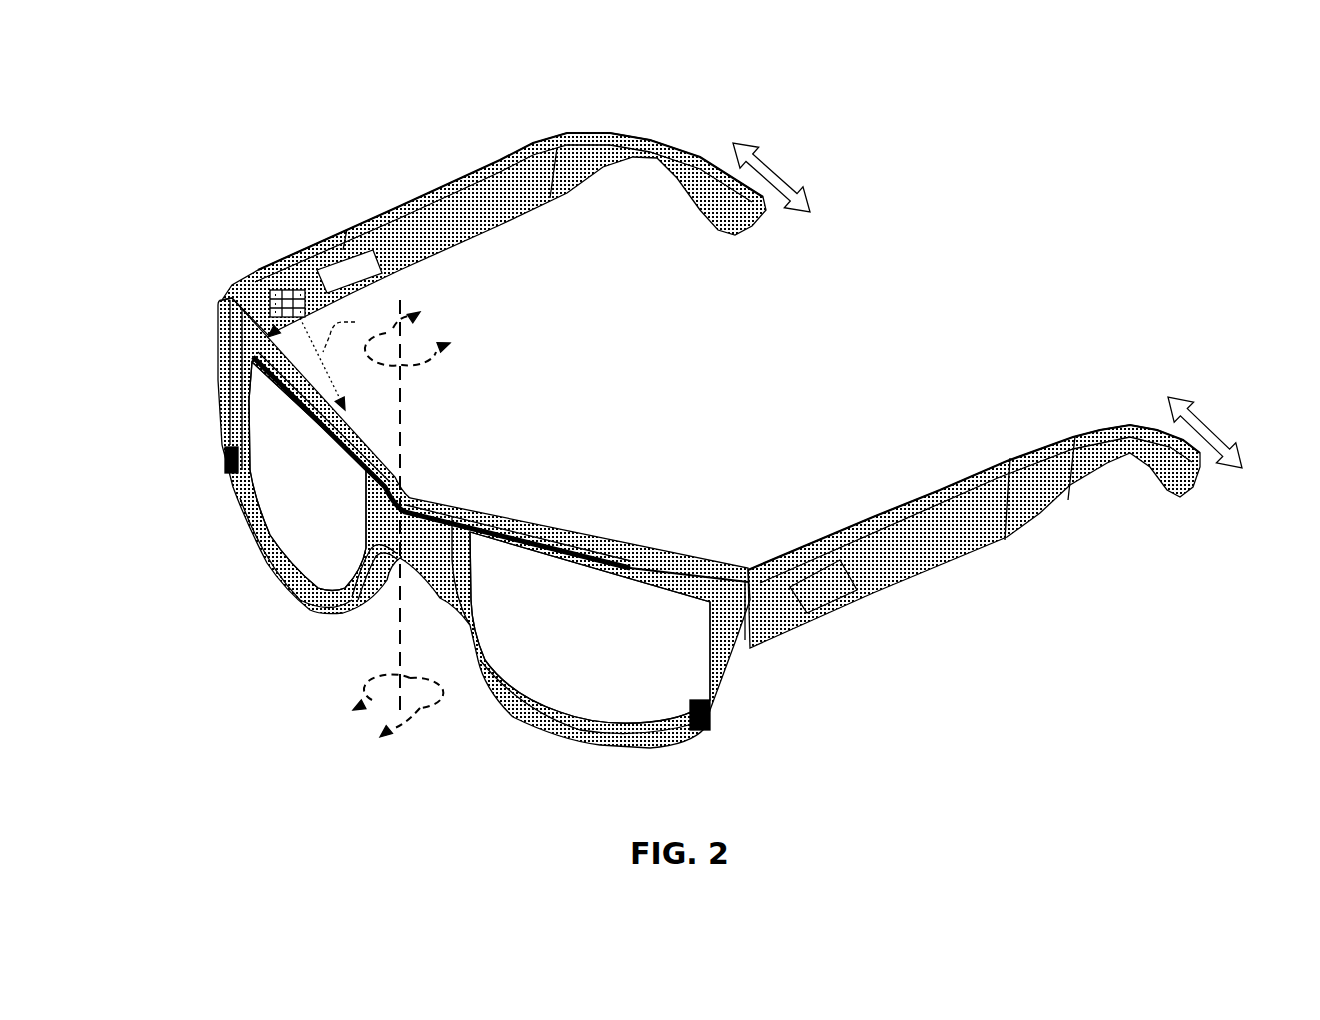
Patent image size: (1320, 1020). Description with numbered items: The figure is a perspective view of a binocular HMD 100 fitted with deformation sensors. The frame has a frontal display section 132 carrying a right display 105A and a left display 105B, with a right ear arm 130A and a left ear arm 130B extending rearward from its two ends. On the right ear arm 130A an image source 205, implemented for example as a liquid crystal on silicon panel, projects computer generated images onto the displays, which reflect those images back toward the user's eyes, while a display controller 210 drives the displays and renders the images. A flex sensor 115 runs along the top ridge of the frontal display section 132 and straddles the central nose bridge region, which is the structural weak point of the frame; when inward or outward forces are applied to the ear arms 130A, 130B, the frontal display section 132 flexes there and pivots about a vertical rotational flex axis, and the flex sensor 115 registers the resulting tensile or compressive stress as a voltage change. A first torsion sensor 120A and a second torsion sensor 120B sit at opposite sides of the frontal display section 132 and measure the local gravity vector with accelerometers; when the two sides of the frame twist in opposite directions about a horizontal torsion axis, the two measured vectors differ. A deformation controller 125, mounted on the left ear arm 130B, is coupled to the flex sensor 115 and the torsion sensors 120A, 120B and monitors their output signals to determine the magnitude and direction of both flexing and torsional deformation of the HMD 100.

The binocular HMD 100 is at (1130, 132).
The right display 105A is at (282, 516).
The left display 105B is at (572, 661).
The flex sensor 115 is at (624, 560).
The torsion sensor 120A is at (233, 477).
The torsion sensor 120B is at (706, 728).
The deformation controller 125 is at (824, 588).
The right ear arm 130A is at (423, 196).
The left ear arm 130B is at (947, 491).
The frontal display section 132 is at (556, 481).
The image source 205 is at (283, 290).
The display controller 210 is at (362, 270).